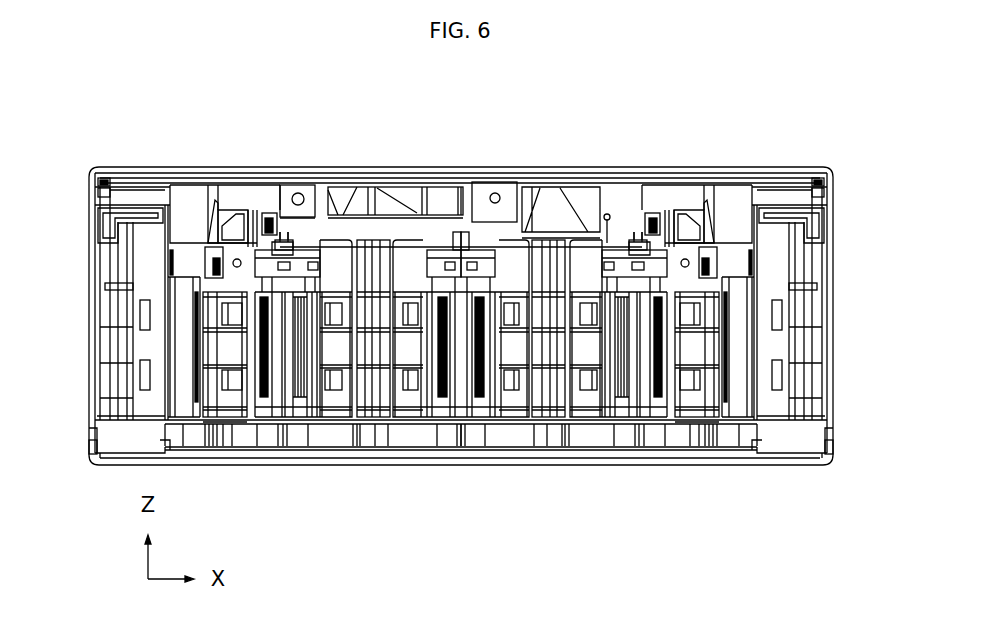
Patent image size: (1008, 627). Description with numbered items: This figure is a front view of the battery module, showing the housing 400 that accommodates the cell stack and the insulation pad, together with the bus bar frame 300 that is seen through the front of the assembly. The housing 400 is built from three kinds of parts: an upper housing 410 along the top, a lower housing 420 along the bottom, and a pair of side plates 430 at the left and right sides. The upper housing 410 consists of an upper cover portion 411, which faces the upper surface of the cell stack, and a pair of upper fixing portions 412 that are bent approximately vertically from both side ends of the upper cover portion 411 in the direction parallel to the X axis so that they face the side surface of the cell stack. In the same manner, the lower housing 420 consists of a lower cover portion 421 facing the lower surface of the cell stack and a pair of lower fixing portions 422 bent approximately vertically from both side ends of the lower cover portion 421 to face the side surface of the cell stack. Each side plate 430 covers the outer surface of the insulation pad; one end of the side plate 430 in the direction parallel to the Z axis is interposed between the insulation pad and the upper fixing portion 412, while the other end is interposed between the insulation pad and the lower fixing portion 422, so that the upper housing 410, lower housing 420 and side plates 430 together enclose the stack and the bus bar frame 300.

The housing 400 is at (461, 319).
The upper housing 410 is at (455, 166).
The upper cover portion 411 is at (799, 167).
The upper fixing portion 412 is at (89, 186).
The lower housing 420 is at (455, 490).
The lower cover portion 421 is at (800, 466).
The lower fixing portion 422 is at (88, 449).
The side plate 430 is at (88, 284).
The bus bar frame 300 is at (478, 440).